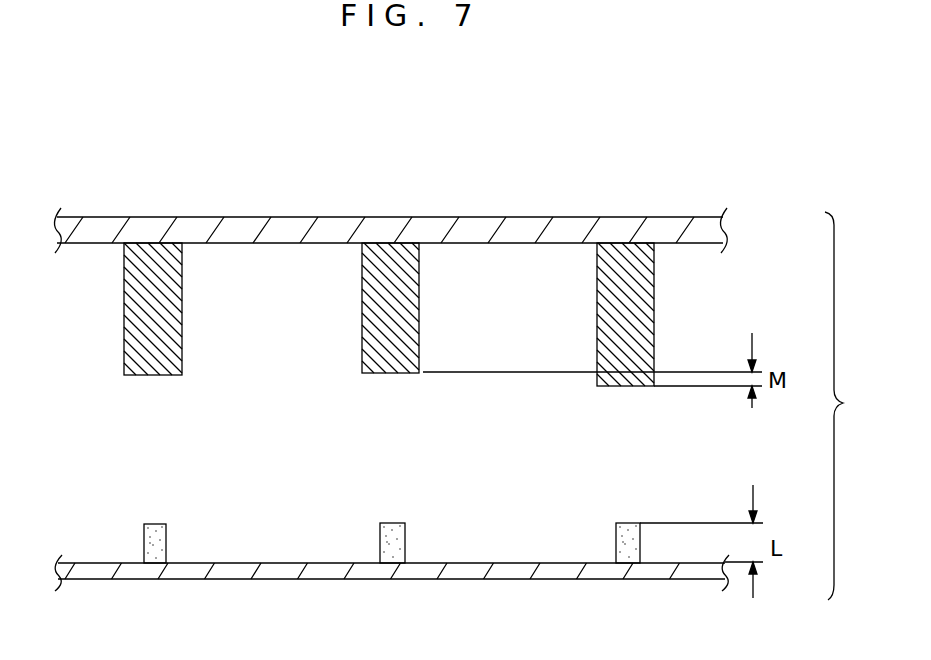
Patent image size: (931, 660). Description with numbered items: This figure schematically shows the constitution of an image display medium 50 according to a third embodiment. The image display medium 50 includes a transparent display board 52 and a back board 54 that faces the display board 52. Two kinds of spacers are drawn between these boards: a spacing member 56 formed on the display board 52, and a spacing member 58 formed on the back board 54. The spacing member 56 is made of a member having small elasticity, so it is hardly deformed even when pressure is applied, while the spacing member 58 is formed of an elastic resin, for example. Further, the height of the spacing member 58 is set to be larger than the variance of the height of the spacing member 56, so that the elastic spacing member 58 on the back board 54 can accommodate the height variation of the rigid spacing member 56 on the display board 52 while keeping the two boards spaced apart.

The image display medium 50 is at (636, 140).
The transparent display board 52 is at (687, 234).
The back board 54 is at (665, 569).
The spacing member 56 is at (130, 304).
The spacing member 58 is at (143, 537).